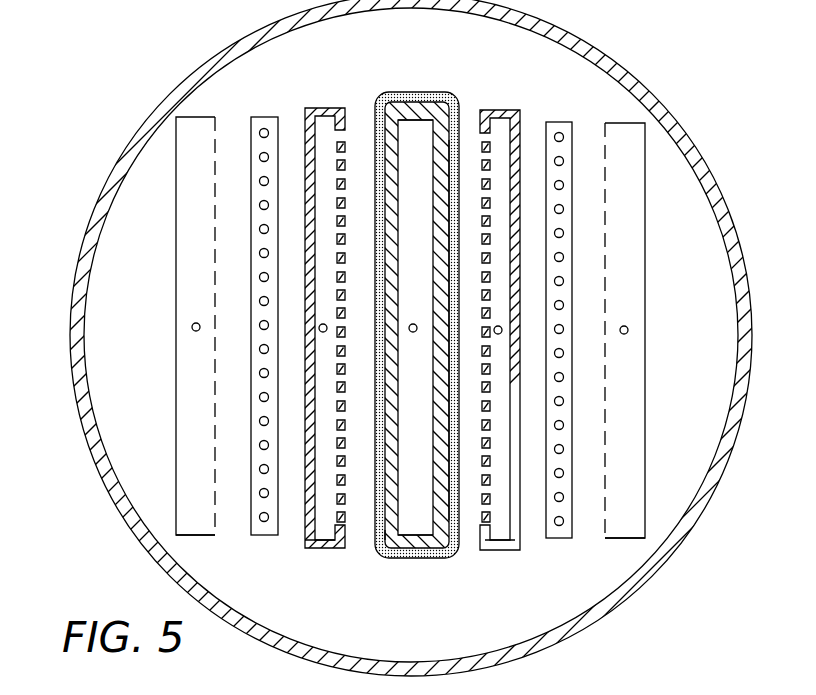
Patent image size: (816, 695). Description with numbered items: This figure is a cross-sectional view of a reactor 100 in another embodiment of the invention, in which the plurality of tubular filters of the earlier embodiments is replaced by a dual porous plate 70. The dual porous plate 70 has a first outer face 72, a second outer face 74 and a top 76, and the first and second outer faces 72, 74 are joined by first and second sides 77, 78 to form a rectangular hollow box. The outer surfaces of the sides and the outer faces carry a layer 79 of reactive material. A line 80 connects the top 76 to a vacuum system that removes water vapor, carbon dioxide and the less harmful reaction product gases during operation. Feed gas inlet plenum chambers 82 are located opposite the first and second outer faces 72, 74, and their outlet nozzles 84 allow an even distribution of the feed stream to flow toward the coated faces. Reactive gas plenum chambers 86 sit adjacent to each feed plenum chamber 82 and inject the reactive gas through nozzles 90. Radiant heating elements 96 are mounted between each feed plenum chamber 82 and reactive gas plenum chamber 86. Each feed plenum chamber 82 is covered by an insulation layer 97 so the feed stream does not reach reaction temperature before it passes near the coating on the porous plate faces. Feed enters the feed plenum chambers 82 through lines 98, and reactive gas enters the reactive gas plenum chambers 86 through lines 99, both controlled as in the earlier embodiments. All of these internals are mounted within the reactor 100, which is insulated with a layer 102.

The dual porous plate 70 is at (408, 347).
The first outer face 72 is at (453, 132).
The second outer face 74 is at (378, 118).
The top 76 is at (425, 255).
The first side 77 is at (415, 118).
The second side 78 is at (420, 565).
The layer 79 is at (393, 556).
The line 80 is at (413, 324).
The feed gas inlet plenum chamber 82 is at (306, 128).
The outlet nozzle 84 is at (346, 155).
The reactive gas plenum chamber 86 is at (193, 537).
The nozzle 90 is at (215, 537).
The radiant heating element 96 is at (259, 303).
The insulation layer 97 is at (312, 550).
The line 98 is at (327, 328).
The line 99 is at (193, 331).
The reactor 100 is at (38, 495).
The layer 102 is at (702, 148).